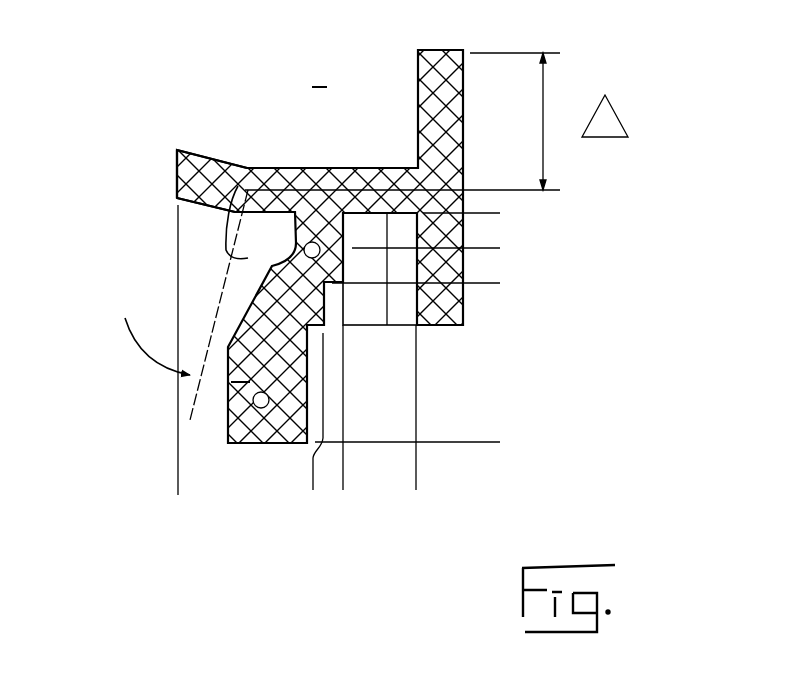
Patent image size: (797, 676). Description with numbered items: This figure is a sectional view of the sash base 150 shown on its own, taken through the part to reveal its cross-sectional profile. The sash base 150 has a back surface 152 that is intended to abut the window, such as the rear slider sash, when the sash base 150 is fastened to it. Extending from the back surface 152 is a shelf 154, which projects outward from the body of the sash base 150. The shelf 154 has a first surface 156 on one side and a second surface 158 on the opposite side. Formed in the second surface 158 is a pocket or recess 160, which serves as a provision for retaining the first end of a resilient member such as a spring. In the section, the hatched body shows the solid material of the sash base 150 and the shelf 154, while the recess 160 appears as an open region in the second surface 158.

The sash base 150 is at (522, 328).
The back surface 152 is at (463, 167).
The shelf 154 is at (177, 163).
The first surface 156 is at (265, 158).
The second surface 158 is at (206, 215).
The pocket or recess 160 is at (234, 208).